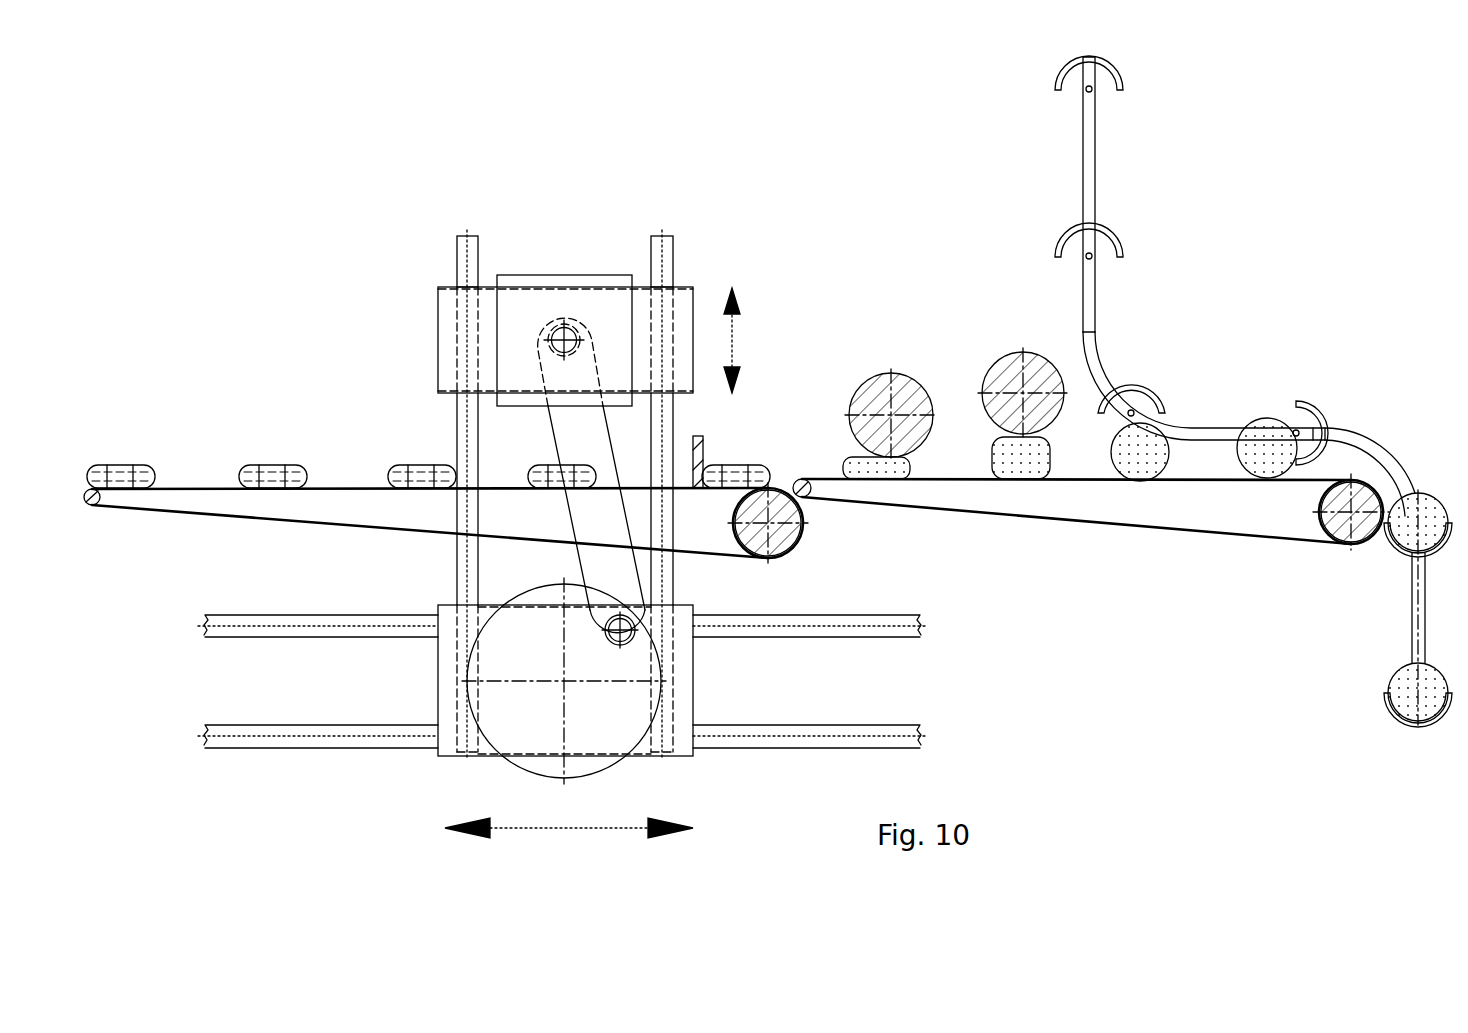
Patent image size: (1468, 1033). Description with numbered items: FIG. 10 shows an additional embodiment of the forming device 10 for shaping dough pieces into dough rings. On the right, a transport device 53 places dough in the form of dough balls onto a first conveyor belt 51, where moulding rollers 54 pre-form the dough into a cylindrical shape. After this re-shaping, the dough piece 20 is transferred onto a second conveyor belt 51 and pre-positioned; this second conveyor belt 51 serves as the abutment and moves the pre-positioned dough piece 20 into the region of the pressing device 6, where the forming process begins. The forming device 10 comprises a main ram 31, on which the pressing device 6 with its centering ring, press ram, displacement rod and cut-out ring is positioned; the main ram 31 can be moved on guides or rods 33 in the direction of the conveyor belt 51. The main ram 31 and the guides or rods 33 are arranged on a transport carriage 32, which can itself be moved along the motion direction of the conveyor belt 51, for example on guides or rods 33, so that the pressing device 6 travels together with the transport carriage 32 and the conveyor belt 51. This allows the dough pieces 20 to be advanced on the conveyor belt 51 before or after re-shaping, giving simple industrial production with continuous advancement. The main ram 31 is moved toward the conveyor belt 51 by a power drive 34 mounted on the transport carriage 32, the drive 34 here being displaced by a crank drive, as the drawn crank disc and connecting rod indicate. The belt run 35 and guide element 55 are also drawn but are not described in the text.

The pressing device 6 is at (616, 455).
The forming device 10 is at (732, 192).
The dough piece 20 is at (398, 472).
The main ram 31 is at (450, 310).
The transport carriage 32 is at (453, 735).
The guides or rods 33 is at (660, 250).
The power drive 34 is at (632, 720).
The feed conveyor belt 35 is at (587, 515).
The conveyor belt 51 is at (790, 515).
The transport device 53 is at (1153, 370).
The moulding rollers 54 is at (891, 415).
The stop guide 55 is at (703, 445).